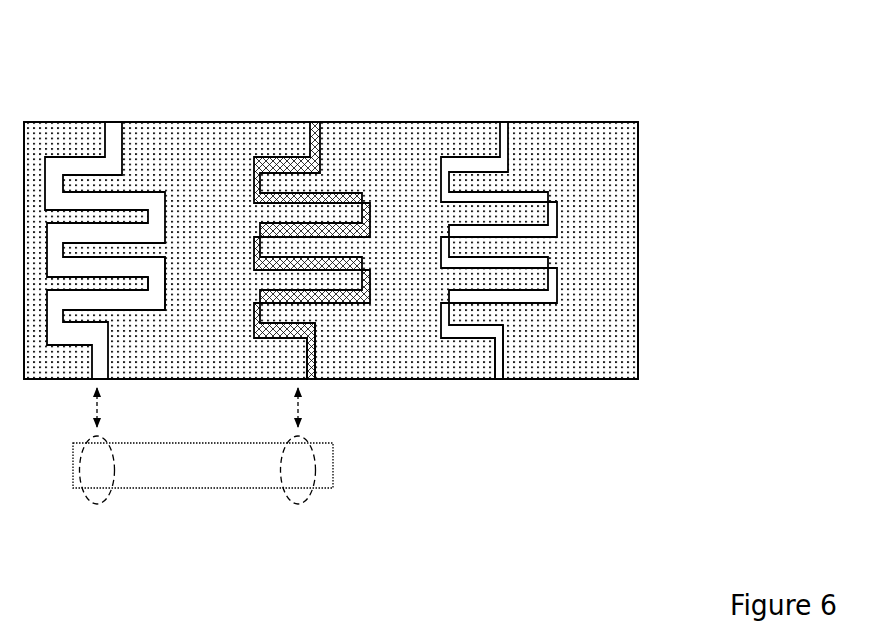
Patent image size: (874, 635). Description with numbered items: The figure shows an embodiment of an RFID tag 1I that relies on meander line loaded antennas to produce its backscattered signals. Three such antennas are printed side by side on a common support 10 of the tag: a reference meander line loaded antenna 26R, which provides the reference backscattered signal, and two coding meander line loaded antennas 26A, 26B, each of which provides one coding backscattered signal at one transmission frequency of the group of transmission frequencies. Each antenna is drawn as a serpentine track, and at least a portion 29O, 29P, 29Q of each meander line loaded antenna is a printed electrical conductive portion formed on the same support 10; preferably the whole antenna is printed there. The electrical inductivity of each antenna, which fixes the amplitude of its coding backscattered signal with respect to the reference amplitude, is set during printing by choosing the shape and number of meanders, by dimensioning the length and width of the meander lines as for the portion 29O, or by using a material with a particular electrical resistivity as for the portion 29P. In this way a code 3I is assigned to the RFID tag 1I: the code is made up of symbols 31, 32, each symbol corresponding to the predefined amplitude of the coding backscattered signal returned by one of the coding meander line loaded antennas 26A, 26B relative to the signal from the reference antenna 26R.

The RFID tag 1I is at (73, 92).
The support 10 is at (638, 217).
The meander line loaded antenna 26A is at (165, 173).
The meander line loaded antenna 26B is at (347, 173).
The reference meander line loaded antenna 26R is at (532, 173).
The printed electrical conductive portion 29O is at (157, 293).
The printed electrical conductive portion 29P is at (308, 328).
The printed electrical conductive portion 29Q is at (492, 330).
The code 3I is at (217, 488).
The symbol 31 is at (98, 503).
The symbol 32 is at (295, 505).